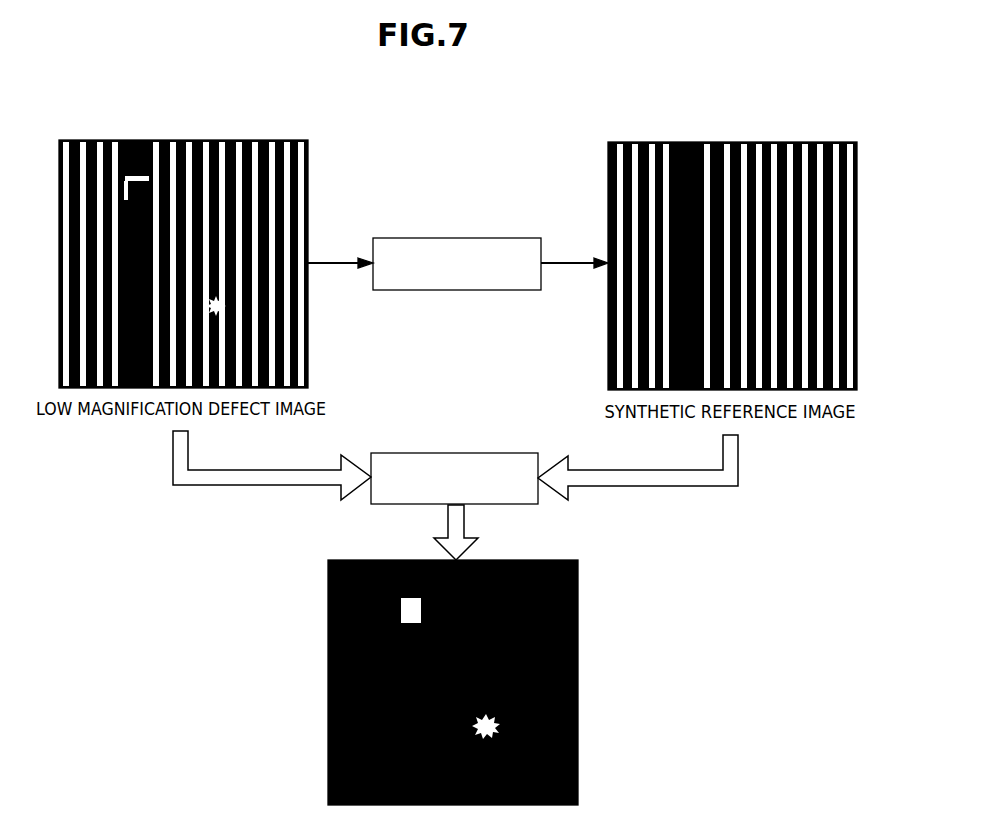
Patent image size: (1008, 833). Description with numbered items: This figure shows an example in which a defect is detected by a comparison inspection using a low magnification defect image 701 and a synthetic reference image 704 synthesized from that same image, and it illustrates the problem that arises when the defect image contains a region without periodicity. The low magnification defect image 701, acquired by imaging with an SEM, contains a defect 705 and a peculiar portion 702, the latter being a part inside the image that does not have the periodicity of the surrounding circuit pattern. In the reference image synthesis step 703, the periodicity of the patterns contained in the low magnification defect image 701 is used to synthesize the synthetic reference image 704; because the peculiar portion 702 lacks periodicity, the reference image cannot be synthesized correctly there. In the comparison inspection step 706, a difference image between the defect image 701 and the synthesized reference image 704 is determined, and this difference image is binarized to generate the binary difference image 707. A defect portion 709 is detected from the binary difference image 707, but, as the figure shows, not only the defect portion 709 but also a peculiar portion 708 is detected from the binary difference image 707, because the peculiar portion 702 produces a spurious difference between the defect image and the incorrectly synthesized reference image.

The low magnification defect image 701 is at (200, 133).
The peculiar portion 702 is at (128, 188).
The reference image synthesis step 703 is at (450, 230).
The synthetic reference image 704 is at (750, 135).
The defect 705 is at (212, 297).
The comparison inspection step 706 is at (447, 446).
The binary difference image 707 is at (503, 552).
The peculiar portion 708 is at (415, 600).
The defect portion 709 is at (490, 713).